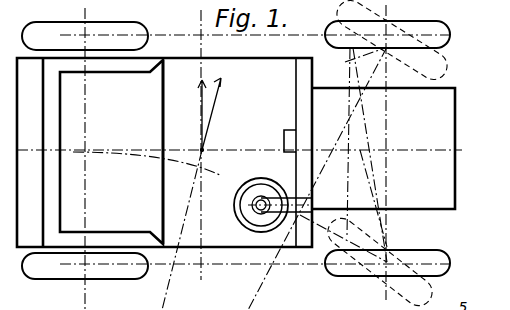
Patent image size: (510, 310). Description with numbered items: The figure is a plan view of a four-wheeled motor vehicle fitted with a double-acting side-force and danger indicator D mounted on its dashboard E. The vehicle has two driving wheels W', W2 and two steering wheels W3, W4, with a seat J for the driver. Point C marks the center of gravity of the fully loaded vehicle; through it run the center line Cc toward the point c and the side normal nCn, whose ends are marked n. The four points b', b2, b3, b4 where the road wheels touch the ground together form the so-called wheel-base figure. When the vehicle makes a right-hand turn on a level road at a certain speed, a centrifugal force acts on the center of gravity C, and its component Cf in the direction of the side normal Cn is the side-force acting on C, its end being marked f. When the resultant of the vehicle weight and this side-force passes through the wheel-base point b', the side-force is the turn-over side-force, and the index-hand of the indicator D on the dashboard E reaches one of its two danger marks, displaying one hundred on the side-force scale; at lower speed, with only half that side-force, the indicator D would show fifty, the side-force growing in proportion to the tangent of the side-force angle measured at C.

The driving wheel W' is at (94, 29).
The driving wheel W2 is at (112, 278).
The steering wheel (road wheel) W3 is at (440, 272).
The steering wheel (road wheel) W4 is at (438, 35).
The wheel ground-contact point b' is at (68, 38).
The wheel ground-contact point b2 is at (82, 268).
The wheel ground-contact point b3 is at (412, 261).
The wheel ground-contact point b4 is at (412, 33).
The side normal n is at (201, 150).
The side-force component f is at (195, 110).
The dashboard E is at (296, 83).
The driver's seat J is at (168, 142).
The center of gravity C is at (204, 150).
The double-acting side-force and danger indicator D is at (286, 147).
The center line c is at (469, 151).